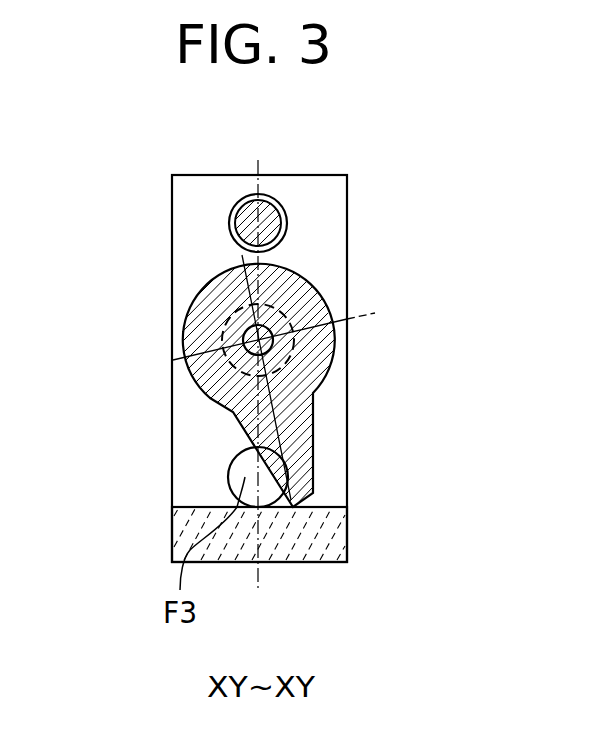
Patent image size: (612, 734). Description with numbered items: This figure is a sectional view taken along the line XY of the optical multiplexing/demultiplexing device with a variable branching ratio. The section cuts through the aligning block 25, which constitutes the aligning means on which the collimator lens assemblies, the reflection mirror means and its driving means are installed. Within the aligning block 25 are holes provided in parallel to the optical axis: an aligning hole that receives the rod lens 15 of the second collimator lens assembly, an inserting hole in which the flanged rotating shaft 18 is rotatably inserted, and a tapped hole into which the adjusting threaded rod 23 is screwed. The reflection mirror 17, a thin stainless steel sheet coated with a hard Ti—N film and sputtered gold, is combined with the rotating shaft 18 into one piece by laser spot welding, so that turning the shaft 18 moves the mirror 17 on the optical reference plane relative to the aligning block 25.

The rod lens 15 is at (232, 475).
The reflection mirror 17 is at (305, 300).
The flanged rotating shaft 18 is at (300, 352).
The adjusting threaded rod 23 is at (250, 227).
The aligning block 25 is at (348, 542).